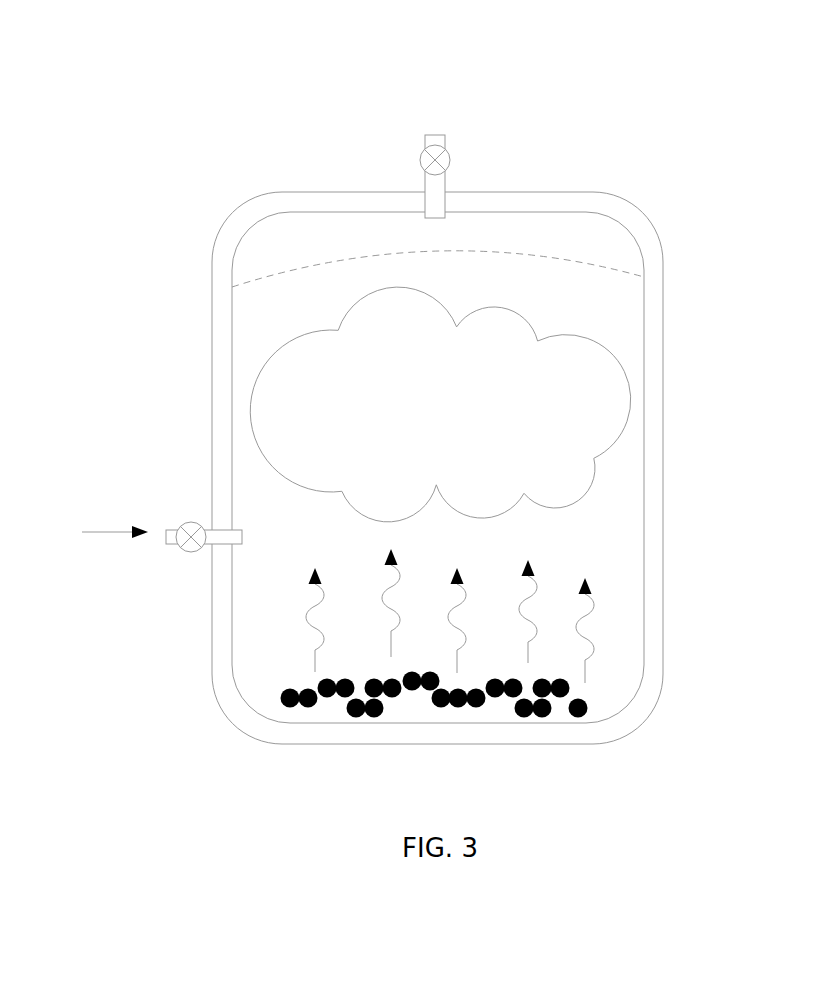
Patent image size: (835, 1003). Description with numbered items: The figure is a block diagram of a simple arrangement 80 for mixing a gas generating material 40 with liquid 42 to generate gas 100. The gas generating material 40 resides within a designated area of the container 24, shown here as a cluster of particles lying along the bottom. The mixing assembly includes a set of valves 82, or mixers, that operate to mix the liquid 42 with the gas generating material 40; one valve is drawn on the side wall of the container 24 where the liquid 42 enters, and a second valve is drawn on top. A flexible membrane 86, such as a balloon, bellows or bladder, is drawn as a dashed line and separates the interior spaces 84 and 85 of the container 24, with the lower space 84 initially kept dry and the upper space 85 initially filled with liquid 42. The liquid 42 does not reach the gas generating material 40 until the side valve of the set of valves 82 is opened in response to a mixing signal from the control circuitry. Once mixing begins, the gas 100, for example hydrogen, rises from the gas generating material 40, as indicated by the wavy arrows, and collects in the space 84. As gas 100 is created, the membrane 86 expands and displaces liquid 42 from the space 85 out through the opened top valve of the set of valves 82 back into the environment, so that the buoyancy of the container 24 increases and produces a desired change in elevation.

The arrangement 80 is at (54, 52).
The set of valves 82 is at (298, 98).
The interior space 85 is at (276, 248).
The interior space 84 is at (307, 311).
The flexible membrane 86 is at (557, 260).
The gas 100 is at (526, 412).
The liquid 42 is at (100, 532).
The gas generating material 40 is at (276, 658).
The container 24 is at (653, 615).